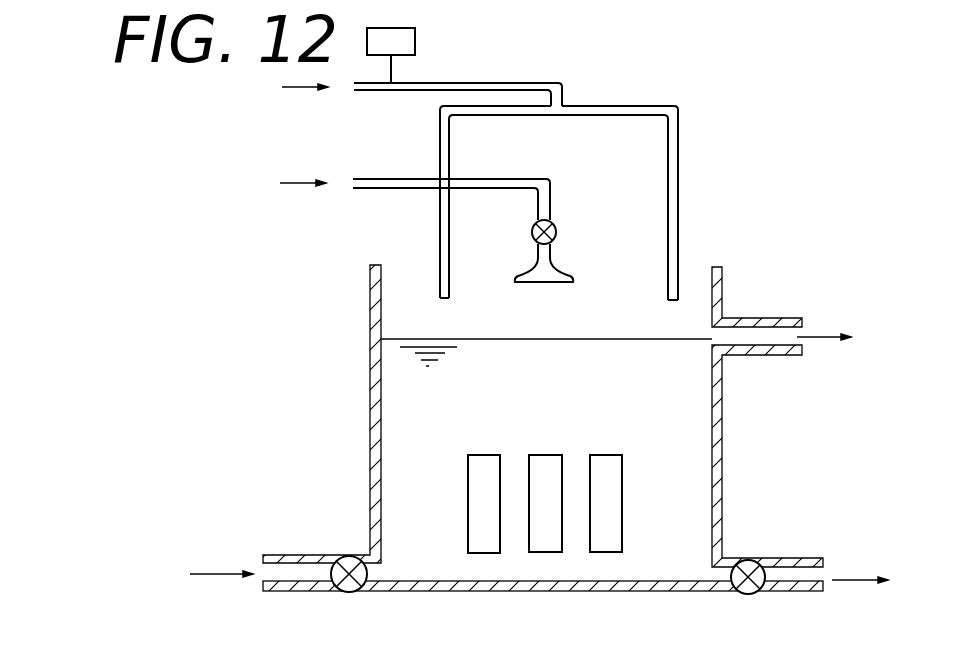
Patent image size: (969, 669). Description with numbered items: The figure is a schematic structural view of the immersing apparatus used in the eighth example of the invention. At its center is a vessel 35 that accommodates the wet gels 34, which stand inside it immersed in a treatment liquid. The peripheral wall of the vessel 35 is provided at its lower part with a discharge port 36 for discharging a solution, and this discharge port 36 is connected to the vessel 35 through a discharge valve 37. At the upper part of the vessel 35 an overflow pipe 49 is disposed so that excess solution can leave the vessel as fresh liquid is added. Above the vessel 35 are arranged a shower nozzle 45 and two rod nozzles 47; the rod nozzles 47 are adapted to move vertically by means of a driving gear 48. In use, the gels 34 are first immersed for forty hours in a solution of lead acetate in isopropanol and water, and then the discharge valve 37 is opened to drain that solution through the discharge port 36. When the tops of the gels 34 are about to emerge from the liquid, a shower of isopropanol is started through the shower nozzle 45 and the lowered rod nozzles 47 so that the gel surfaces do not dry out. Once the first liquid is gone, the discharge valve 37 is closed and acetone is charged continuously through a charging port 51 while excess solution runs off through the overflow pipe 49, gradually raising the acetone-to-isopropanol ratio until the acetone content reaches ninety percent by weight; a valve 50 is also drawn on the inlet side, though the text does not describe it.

The wet gel 34 is at (605, 538).
The vessel 35 is at (720, 493).
The discharge port 36 is at (792, 575).
The discharge valve 37 is at (748, 587).
The shower nozzle 45 is at (557, 272).
The rod nozzles 47 is at (675, 150).
The driving gear 48 is at (405, 38).
The overflow pipe 49 is at (745, 332).
The inlet valve 50 is at (350, 582).
The charging port 51 is at (293, 565).